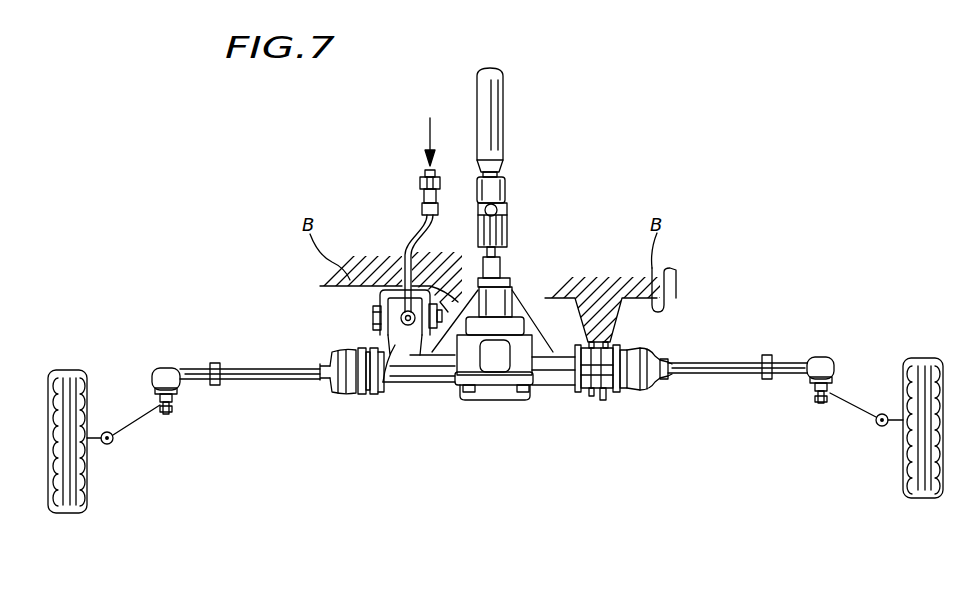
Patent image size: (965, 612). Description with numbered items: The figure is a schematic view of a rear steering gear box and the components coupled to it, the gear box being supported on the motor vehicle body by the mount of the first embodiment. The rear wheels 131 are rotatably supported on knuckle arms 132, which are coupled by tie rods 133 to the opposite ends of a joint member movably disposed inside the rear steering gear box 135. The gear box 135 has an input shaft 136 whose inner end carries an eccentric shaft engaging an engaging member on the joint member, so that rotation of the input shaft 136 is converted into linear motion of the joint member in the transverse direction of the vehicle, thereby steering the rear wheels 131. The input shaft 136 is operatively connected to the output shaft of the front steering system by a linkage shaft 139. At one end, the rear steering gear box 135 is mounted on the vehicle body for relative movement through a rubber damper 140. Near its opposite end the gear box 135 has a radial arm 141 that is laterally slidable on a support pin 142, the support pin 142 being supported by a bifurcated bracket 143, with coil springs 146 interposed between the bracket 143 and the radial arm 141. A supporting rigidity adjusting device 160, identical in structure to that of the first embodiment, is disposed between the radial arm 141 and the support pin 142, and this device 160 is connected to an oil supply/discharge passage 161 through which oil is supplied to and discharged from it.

The rear wheel 131 is at (55, 510).
The knuckle arm 132 is at (158, 408).
The tie rod 133 is at (266, 380).
The rear steering gear box 135 is at (445, 388).
The input shaft 136 is at (506, 248).
The linkage shaft 139 is at (503, 92).
The rubber damper 140 is at (602, 402).
The radial arm 141 is at (385, 338).
The support pin 142 is at (450, 300).
The bifurcated bracket 143 is at (390, 288).
The coil spring 146 is at (374, 303).
The supporting rigidity adjusting device 160 is at (369, 287).
The oil supply/discharge passage 161 is at (424, 213).